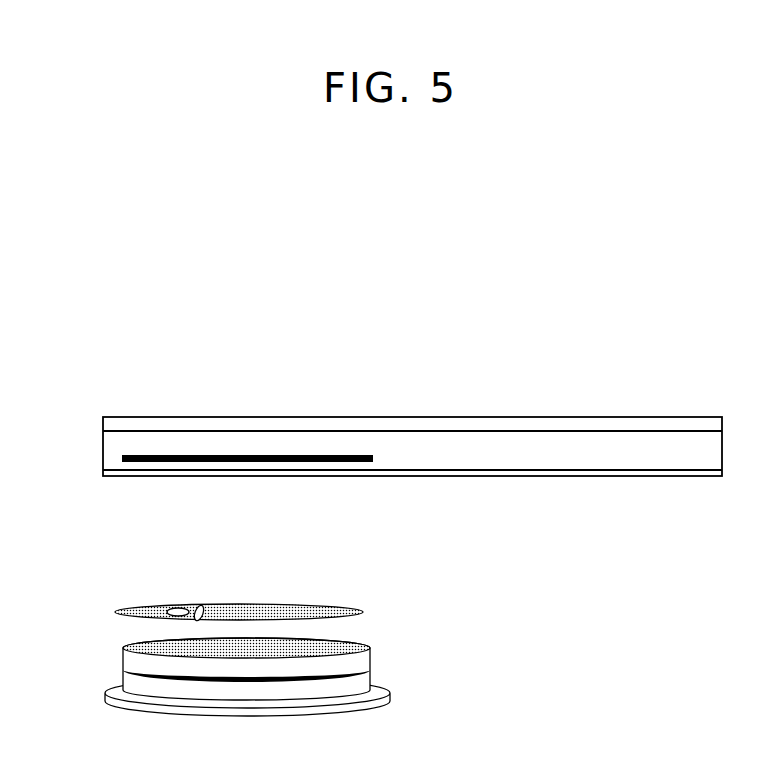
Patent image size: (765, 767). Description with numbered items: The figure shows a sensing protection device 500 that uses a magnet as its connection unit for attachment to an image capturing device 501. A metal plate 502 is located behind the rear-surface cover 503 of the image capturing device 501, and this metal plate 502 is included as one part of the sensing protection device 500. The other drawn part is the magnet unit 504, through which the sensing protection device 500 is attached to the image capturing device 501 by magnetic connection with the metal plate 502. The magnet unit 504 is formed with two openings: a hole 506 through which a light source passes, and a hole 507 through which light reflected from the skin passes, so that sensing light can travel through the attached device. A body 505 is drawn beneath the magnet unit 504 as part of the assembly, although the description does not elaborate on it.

The sensing protection device 500 is at (93, 613).
The image capturing device 501 is at (171, 423).
The metal plate 502 is at (121, 446).
The rear-surface cover 503 is at (115, 473).
The magnet unit 504 is at (346, 612).
The cylindrical body 505 is at (358, 660).
The hole 506 is at (177, 608).
The hole 507 is at (203, 605).